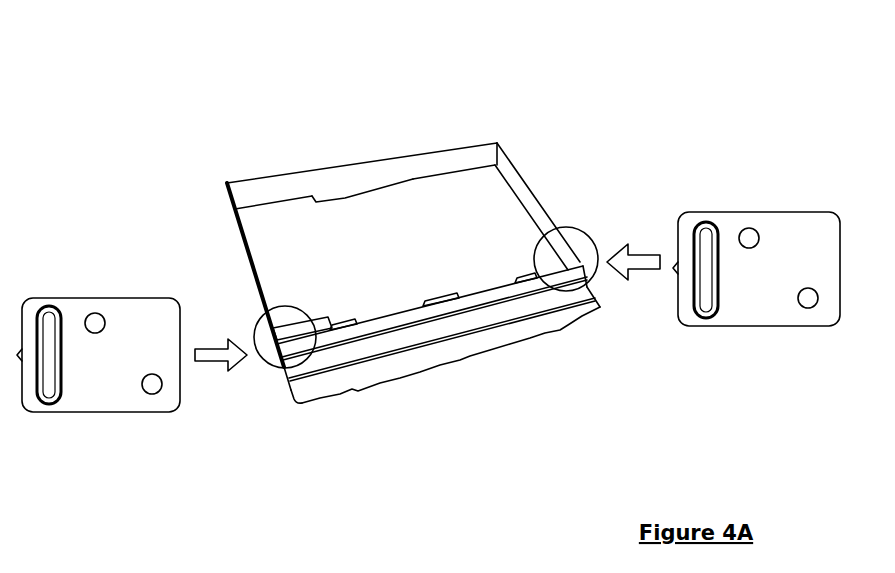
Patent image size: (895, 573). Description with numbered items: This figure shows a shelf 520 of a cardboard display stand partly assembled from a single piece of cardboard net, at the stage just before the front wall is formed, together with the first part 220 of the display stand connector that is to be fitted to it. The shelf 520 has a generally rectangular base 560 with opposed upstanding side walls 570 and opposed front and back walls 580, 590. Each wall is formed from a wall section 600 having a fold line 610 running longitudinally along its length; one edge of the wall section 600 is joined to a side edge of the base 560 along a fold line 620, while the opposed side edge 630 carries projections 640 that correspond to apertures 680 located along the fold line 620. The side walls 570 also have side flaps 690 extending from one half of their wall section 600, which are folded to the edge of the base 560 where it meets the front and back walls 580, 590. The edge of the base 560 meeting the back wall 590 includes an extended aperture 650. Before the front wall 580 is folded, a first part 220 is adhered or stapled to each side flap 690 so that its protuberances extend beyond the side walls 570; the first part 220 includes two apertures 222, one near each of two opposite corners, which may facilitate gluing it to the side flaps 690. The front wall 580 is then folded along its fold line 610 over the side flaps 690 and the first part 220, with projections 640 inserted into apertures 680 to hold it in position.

The first part 220 is at (437, 308).
The apertures 222 is at (445, 380).
The shelf 520 is at (331, 153).
The base 560 is at (420, 144).
The side wall 570 is at (394, 253).
The front wall 580 is at (451, 405).
The back wall 590 is at (362, 123).
The wall section 600 is at (397, 372).
The fold line 610 is at (442, 356).
The fold line 620 is at (458, 325).
The opposed side edge 630 is at (653, 330).
The projections 640 is at (385, 385).
The extended aperture 650 is at (362, 118).
The apertures 680 is at (406, 143).
The side flaps 690 is at (607, 228).